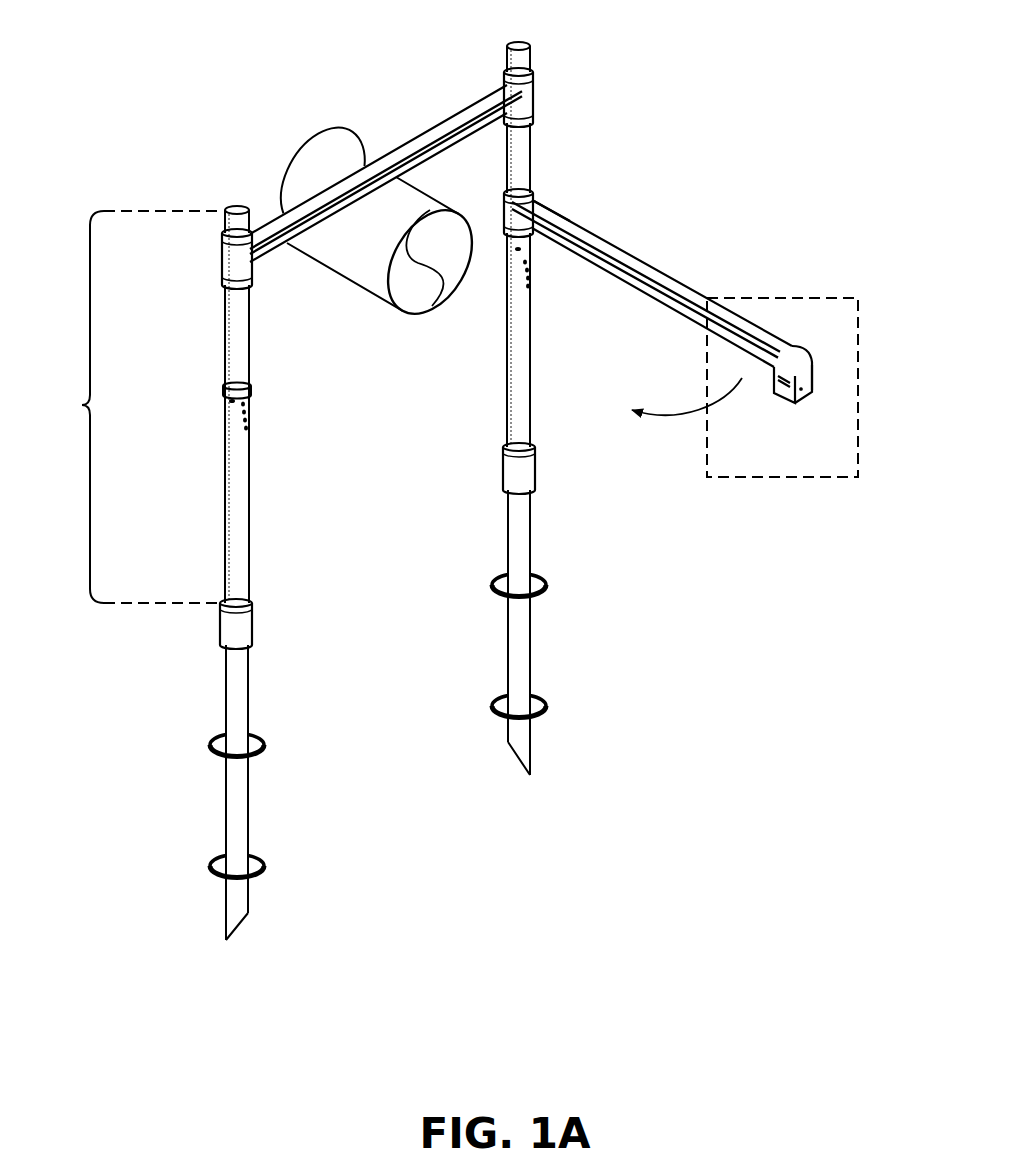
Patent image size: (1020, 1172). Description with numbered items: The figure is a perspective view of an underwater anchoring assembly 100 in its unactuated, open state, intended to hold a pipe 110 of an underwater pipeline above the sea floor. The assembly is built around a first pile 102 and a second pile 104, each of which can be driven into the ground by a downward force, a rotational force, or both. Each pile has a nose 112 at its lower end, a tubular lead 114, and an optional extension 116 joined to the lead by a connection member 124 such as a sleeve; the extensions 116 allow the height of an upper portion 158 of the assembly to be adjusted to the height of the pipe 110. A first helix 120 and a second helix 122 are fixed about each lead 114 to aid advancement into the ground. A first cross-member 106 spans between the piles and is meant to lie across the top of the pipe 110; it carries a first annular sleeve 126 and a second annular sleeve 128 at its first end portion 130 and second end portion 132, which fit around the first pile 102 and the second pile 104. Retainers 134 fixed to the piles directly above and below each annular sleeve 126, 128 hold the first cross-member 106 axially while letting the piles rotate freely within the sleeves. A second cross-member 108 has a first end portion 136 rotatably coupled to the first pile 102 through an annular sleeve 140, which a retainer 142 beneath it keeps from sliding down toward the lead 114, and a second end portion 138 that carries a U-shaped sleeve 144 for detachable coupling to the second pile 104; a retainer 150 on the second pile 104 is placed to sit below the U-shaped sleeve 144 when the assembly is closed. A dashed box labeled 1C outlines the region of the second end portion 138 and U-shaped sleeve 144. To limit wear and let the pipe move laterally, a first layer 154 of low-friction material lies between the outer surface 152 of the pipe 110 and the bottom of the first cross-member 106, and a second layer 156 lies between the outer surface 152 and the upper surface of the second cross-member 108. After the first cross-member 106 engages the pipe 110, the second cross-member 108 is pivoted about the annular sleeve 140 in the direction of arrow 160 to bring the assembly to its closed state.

The underwater anchoring assembly 100 is at (175, 90).
The first pile 102 is at (542, 338).
The second pile 104 is at (192, 514).
The first cross-member 106 is at (404, 146).
The second cross-member 108 is at (680, 274).
The pipe 110 is at (341, 254).
The nose 112 is at (535, 753).
The lead 114 is at (517, 660).
The extension 116 is at (518, 388).
The first helix 120 is at (500, 713).
The second helix 122 is at (547, 580).
The connection member 124 is at (502, 466).
The first annular sleeve 126 is at (534, 92).
The second annular sleeve 128 is at (222, 258).
The first end portion 130 is at (496, 88).
The second end portion 132 is at (260, 208).
The retainer 134 is at (531, 70).
The first end portion 136 is at (560, 200).
The second end portion 138 is at (789, 333).
The annular sleeve 140 is at (504, 211).
The retainer 142 is at (525, 242).
The U-shaped sleeve 144 is at (828, 372).
The retainer 150 is at (222, 388).
The outer surface 152 is at (328, 170).
The first layer 154 is at (266, 256).
The second layer 156 is at (720, 307).
The upper portion 158 is at (129, 407).
The arrow 160 is at (682, 418).
The detail view FIG. 1C is at (800, 480).